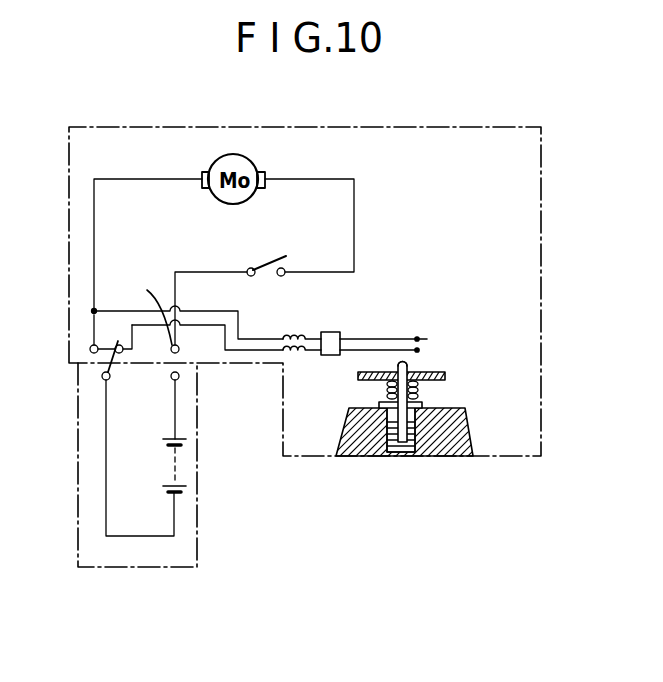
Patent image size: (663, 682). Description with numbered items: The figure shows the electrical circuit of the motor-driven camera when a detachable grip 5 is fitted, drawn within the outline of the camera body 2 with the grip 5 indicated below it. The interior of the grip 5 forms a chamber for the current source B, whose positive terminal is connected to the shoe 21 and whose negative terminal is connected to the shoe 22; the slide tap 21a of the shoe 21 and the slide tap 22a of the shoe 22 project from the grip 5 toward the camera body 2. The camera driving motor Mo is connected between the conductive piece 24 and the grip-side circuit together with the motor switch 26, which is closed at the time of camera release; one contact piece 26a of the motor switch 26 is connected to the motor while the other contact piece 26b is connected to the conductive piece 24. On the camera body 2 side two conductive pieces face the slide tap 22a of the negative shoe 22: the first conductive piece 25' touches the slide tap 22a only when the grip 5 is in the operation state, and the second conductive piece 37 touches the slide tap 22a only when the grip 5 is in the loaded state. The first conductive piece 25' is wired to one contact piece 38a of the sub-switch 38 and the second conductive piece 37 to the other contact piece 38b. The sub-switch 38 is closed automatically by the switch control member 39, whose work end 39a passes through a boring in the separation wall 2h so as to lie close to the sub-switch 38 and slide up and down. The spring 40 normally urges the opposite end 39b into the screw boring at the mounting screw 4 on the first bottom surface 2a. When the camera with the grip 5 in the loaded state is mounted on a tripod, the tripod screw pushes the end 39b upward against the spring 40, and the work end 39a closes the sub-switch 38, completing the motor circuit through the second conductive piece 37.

The camera body 2 is at (480, 214).
The first bottom surface 2a is at (438, 458).
The separation wall 2h is at (358, 377).
The mounting screw 4 is at (401, 453).
The grip 5 is at (105, 562).
The shoe 21 is at (176, 422).
The slide tap 21a is at (178, 352).
The shoe 22 is at (106, 465).
The slide tap 22a is at (110, 362).
The conductive piece 24 is at (149, 307).
The first conductive piece 25' is at (62, 350).
The motor switch 26 is at (289, 253).
The contact piece 26a is at (284, 278).
The contact piece 26b is at (255, 268).
The second conductive piece 37 is at (121, 353).
The sub-switch 38 is at (418, 337).
The contact piece 38a is at (398, 339).
The contact piece 38b is at (370, 350).
The switch control member 39 is at (409, 367).
The work end 39a is at (405, 362).
The end 39b is at (392, 440).
The spring 40 is at (418, 393).
The current source B is at (176, 468).